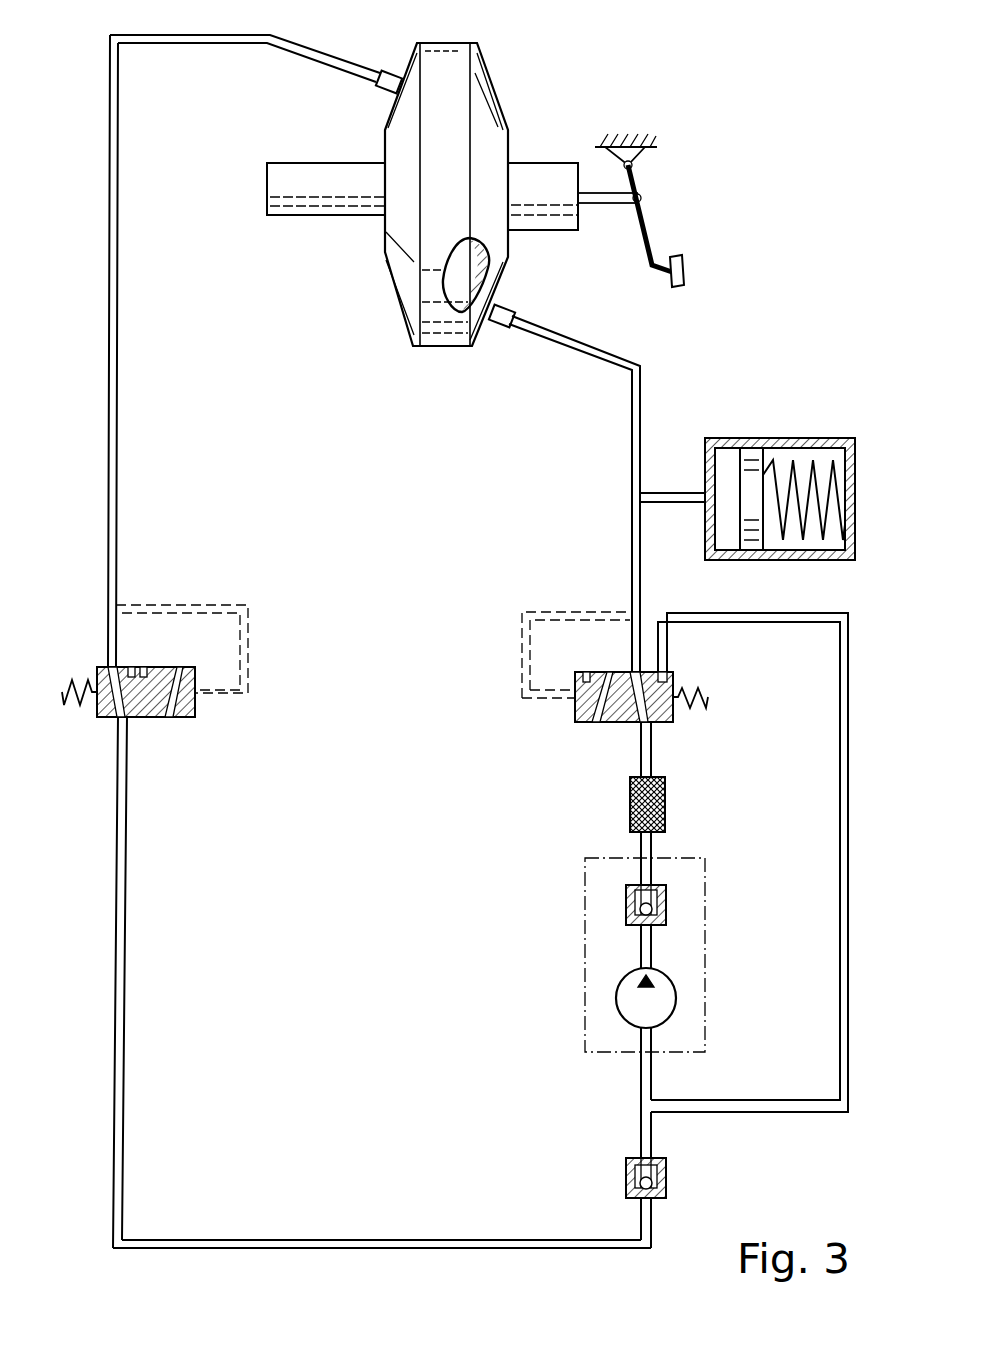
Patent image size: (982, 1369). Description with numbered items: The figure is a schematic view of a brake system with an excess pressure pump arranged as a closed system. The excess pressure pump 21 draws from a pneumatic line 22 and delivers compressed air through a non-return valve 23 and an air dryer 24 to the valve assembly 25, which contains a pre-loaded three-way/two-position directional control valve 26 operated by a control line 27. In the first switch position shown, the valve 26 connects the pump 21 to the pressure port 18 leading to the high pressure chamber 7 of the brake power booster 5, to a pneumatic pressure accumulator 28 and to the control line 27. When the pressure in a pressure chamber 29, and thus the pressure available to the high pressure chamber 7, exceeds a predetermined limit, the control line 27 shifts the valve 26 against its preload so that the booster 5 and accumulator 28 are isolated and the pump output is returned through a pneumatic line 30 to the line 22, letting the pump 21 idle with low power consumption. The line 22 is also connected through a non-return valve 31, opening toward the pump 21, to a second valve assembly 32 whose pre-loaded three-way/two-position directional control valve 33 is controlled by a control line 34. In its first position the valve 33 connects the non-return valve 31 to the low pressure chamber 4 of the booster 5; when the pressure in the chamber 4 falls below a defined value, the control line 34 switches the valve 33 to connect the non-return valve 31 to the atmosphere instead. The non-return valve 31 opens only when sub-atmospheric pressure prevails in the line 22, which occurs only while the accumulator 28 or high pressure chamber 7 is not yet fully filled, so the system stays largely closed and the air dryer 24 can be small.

The low pressure chamber 4 is at (457, 278).
The brake power booster 5 is at (495, 64).
The high pressure chamber 7 is at (493, 277).
The pressure port 18 is at (499, 326).
The excess pressure pump 21 is at (616, 1000).
The pneumatic line 22 is at (640, 1080).
The non-return valve 23 is at (627, 910).
The air dryer 24 is at (666, 800).
The valve assembly 25 is at (586, 721).
The three-way/two-position directional control valve 26 is at (632, 723).
The control line 27 is at (522, 660).
The pneumatic pressure accumulator 28 is at (795, 441).
The pressure chamber 29 is at (725, 463).
The pneumatic line 30 is at (840, 905).
The non-return valve 31 is at (626, 1178).
The second valve assembly 32 is at (189, 717).
The three-way/two-position directional control valve 33 is at (133, 718).
The control line 34 is at (248, 655).